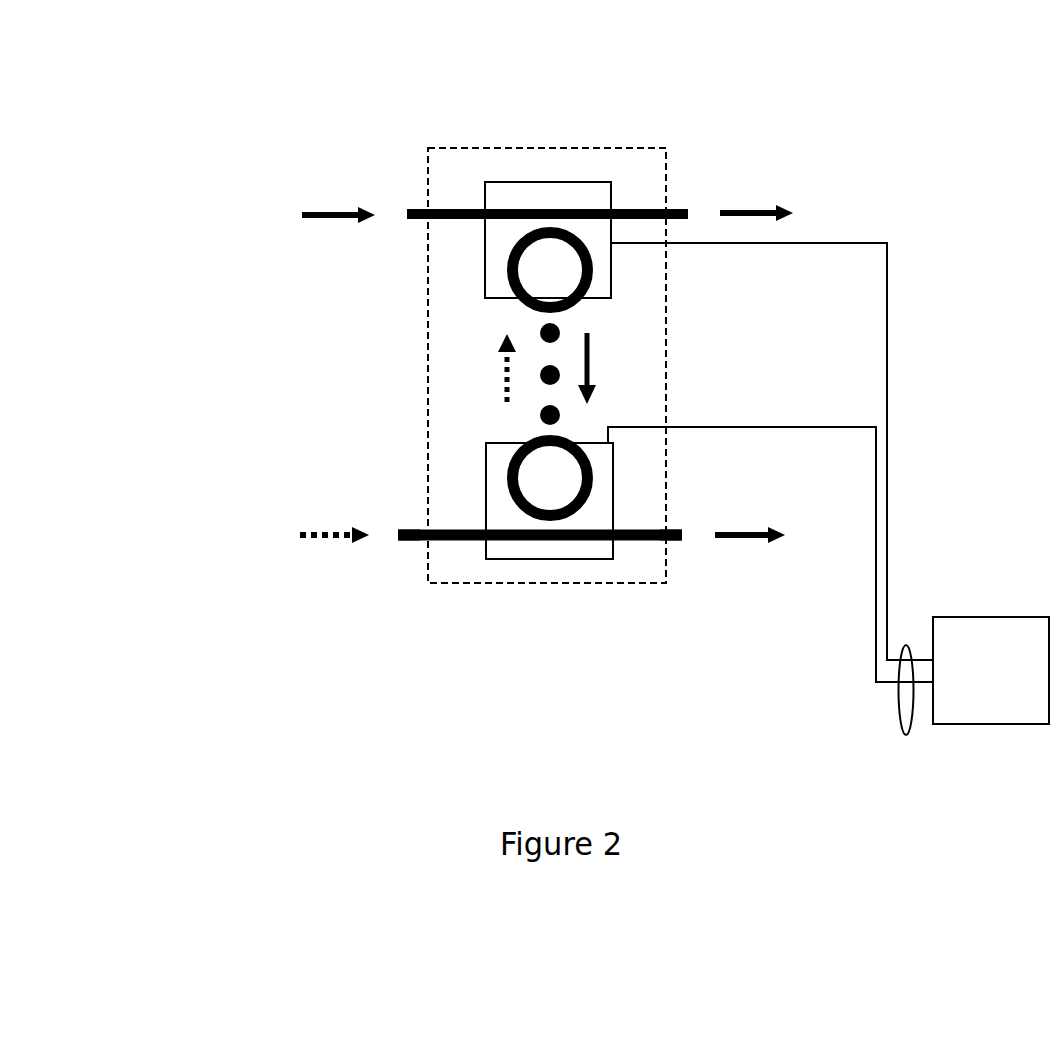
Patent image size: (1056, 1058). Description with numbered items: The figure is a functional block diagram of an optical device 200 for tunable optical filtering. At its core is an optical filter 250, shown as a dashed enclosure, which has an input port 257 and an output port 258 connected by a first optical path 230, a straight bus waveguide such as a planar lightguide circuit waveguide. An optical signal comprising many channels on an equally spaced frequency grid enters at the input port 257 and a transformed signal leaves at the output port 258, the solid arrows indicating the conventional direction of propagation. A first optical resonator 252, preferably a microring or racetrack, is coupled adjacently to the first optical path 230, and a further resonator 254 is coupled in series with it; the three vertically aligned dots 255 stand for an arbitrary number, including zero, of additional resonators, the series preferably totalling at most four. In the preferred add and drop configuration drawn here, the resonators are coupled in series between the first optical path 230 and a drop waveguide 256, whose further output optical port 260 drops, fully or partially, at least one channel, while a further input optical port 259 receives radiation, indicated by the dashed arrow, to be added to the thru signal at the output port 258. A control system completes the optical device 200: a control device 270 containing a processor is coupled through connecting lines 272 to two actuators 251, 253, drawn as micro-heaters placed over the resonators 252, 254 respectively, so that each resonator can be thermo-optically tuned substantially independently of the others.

The optical device 200 is at (202, 263).
The first optical path 230 is at (536, 209).
The optical filter 250 is at (534, 146).
The actuator 251 is at (612, 182).
The first optical resonator 252 is at (506, 277).
The actuator 253 is at (538, 557).
The further resonator 254 is at (508, 467).
The arbitrary number of resonators 255 is at (556, 368).
The drop waveguide 256 is at (630, 540).
The input port 257 is at (427, 206).
The output port 258 is at (678, 210).
The further input optical port 259 is at (398, 531).
The further output optical port 260 is at (680, 525).
The control device 270 is at (983, 617).
The connecting lines 272 is at (895, 702).